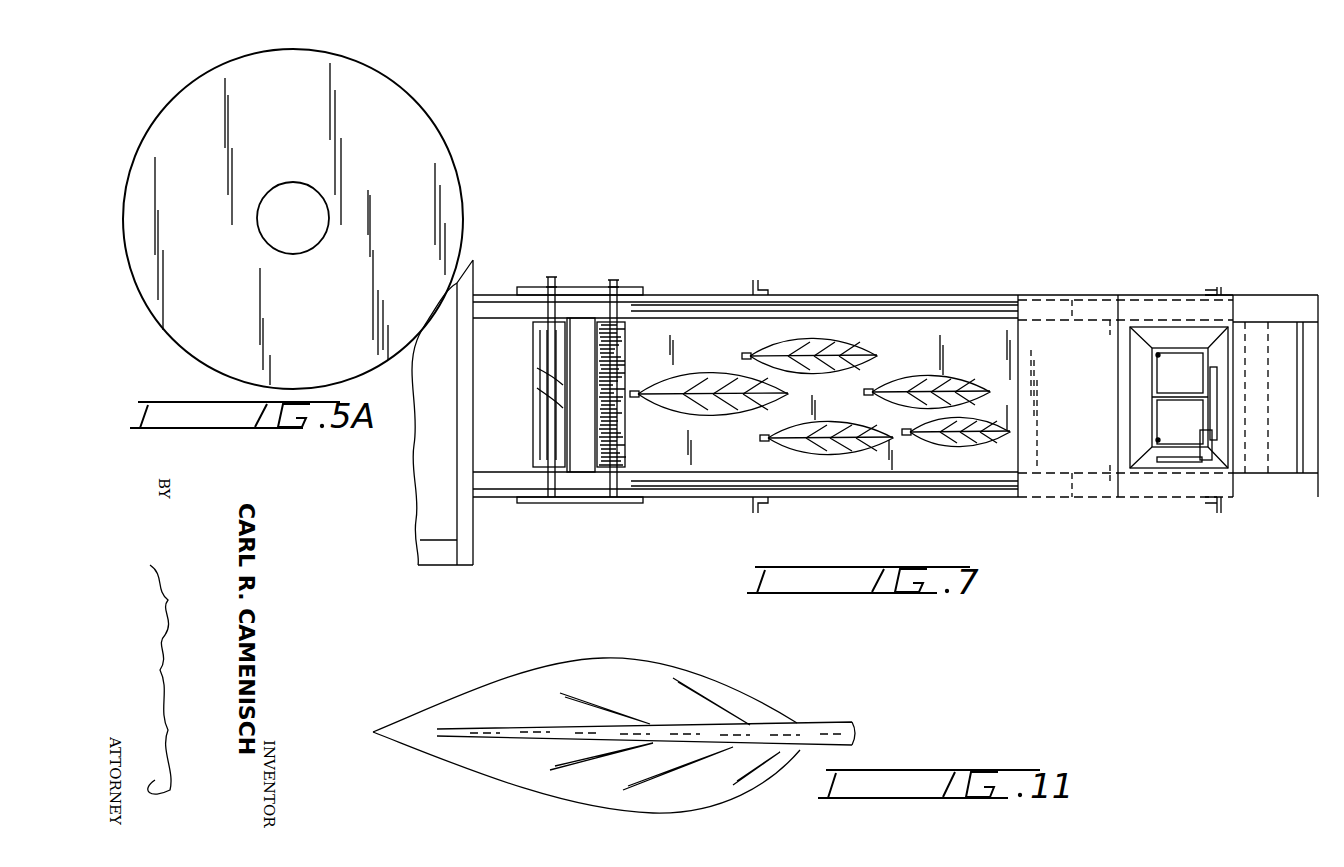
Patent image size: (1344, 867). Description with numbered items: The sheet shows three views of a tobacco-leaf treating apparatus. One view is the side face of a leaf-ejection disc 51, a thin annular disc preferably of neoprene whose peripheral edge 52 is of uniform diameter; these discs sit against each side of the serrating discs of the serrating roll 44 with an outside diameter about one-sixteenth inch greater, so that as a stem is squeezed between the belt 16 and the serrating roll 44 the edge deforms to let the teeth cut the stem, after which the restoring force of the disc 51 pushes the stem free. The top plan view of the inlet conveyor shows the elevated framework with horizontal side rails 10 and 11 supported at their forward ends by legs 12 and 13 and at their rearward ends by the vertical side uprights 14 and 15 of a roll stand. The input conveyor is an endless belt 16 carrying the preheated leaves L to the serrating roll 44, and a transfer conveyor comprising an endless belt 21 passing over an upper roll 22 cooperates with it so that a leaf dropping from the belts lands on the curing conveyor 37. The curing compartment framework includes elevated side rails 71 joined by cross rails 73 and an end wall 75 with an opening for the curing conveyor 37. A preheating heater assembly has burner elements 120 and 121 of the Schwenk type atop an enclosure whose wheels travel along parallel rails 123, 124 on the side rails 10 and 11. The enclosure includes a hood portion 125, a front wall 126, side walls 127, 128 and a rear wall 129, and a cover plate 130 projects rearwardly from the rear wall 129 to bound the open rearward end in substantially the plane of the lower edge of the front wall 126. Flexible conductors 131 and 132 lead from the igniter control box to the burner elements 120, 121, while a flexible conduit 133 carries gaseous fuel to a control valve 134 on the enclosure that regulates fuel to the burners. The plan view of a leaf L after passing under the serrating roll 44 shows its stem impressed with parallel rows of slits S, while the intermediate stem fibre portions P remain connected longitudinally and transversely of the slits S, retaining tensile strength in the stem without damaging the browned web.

In FIG. 5A, the leaf-ejection disc 51 is at (415, 145).
In FIG. 5A, the peripheral edge 52 is at (458, 163).
In FIG. 7, the side rail 10 is at (918, 490).
In FIG. 7, the side rail 11 is at (874, 296).
In FIG. 7, the leg 12 is at (1222, 507).
In FIG. 7, the leg 13 is at (1222, 290).
In FIG. 7, the side upright 14 is at (585, 503).
In FIG. 7, the side upright 15 is at (590, 295).
In FIG. 7, the belt 16 is at (594, 421).
In FIG. 7, the endless belt 21 is at (545, 435).
In FIG. 7, the upper roll 22 is at (540, 380).
In FIG. 7, the curing conveyor 37 is at (516, 421).
In FIG. 7, the serrating roll 44 is at (624, 452).
In FIG. 7, the side rail 71 is at (452, 555).
In FIG. 7, the cross rail 73 is at (467, 430).
In FIG. 7, the end wall 75 is at (473, 525).
In FIG. 7, the burner element 120 is at (1173, 368).
In FIG. 7, the burner element 121 is at (1165, 415).
In FIG. 7, the rail 123 is at (800, 305).
In FIG. 7, the rail 124 is at (842, 484).
In FIG. 7, the hood portion 125 is at (1153, 333).
In FIG. 7, the front wall 126 is at (1233, 368).
In FIG. 7, the side wall 127 is at (1150, 499).
In FIG. 7, the side wall 128 is at (1190, 295).
In FIG. 7, the rear wall 129 is at (1118, 378).
In FIG. 7, the cover plate 130 is at (1050, 325).
In FIG. 7, the flexible conductor 131 is at (1158, 440).
In FIG. 7, the flexible conductor 132 is at (1158, 355).
In FIG. 7, the flexible conduit 133 is at (1188, 462).
In FIG. 7, the control valve 134 is at (1214, 450).
In FIG. 7, the leaf L is at (905, 385).
In FIG. 11, the leaf L is at (650, 668).
In FIG. 11, the intermediate stem fibre portions P is at (683, 727).
In FIG. 11, the slits S is at (723, 752).